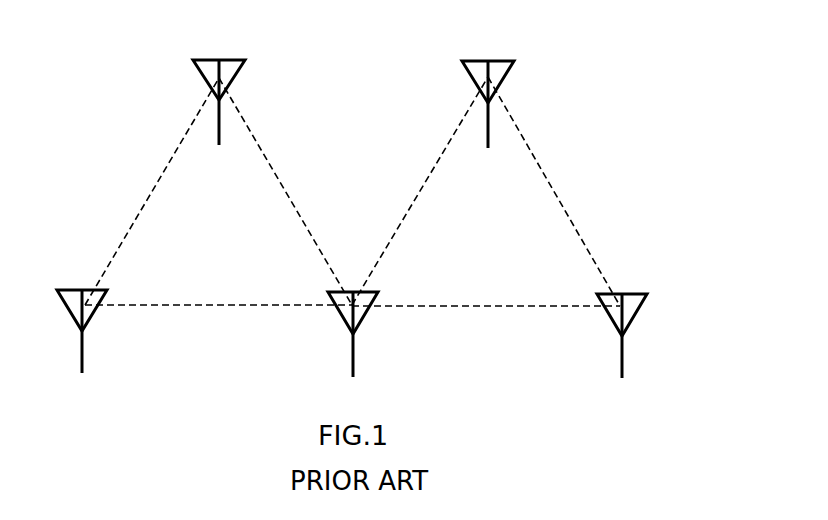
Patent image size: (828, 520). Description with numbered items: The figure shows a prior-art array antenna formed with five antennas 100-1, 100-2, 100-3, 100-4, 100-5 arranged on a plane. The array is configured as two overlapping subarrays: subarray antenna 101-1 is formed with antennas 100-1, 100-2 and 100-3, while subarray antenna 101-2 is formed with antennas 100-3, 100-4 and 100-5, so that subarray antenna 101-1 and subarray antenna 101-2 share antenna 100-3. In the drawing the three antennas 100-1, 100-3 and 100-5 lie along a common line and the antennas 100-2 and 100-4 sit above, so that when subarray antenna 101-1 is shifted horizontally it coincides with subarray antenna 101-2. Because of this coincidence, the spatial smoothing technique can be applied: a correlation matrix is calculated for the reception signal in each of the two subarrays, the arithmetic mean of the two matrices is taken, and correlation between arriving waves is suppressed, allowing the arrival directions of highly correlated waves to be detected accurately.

The antenna 100-1 is at (91, 318).
The antenna 100-2 is at (226, 59).
The antenna 100-3 is at (361, 320).
The antenna 100-4 is at (495, 60).
The antenna 100-5 is at (630, 321).
The subarray antenna 101-1 is at (228, 308).
The subarray antenna 101-2 is at (487, 308).